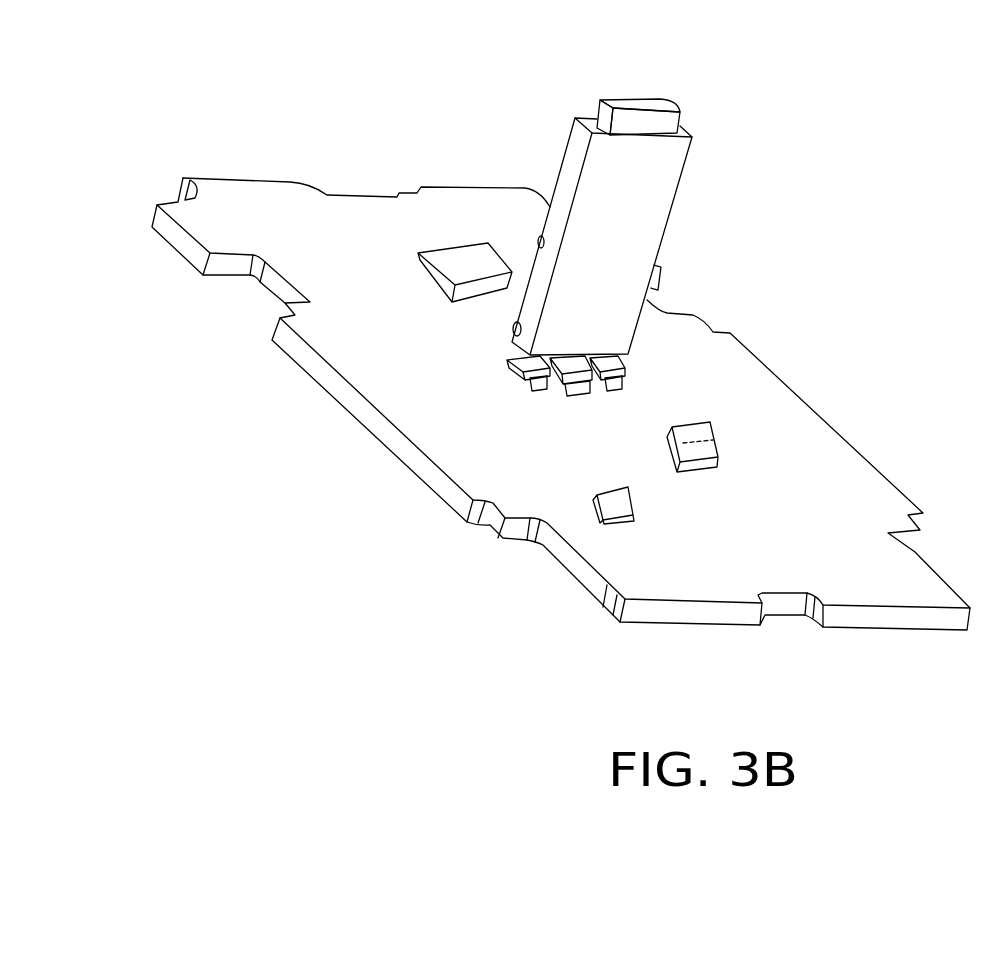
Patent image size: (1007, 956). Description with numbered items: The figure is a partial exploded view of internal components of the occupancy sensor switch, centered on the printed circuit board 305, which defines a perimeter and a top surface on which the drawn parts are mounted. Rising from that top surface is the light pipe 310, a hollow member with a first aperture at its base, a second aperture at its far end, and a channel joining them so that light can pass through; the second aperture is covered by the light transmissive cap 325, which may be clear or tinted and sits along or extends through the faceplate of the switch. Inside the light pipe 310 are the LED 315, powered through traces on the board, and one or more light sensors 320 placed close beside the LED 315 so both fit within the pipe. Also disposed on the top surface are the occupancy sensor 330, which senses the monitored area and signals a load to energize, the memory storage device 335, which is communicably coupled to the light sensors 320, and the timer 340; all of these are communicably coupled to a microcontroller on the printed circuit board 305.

The printed circuit board 305 is at (848, 460).
The light pipe 310 is at (653, 202).
The LED 315 is at (577, 393).
The light sensors 320 is at (620, 377).
The light transmissive cap 325 is at (652, 107).
The occupancy sensor 330 is at (457, 262).
The memory storage device 335 is at (713, 433).
The timer 340 is at (603, 507).